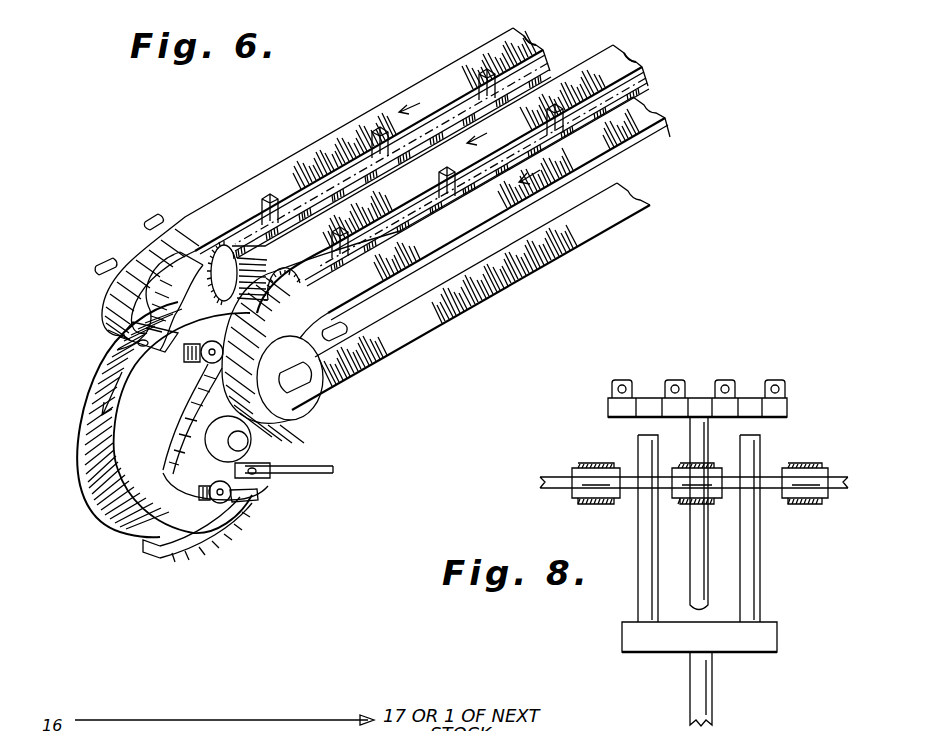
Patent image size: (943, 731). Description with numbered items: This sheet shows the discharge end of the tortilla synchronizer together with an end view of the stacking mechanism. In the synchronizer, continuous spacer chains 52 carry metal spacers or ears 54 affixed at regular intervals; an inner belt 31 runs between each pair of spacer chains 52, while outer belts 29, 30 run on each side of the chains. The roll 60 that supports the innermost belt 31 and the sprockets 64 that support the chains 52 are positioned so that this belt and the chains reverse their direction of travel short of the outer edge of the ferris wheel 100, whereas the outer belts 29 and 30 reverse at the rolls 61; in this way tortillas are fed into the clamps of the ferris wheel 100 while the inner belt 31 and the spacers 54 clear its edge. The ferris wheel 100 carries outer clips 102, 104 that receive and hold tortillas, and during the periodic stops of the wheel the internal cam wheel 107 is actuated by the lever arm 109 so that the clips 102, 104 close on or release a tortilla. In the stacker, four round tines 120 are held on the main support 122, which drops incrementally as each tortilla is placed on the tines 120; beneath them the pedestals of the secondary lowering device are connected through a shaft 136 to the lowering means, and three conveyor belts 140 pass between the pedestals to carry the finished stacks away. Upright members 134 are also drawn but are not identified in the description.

In FIG. 6, the belt 29 is at (308, 155).
In FIG. 6, the belt 30 is at (647, 135).
In FIG. 6, the belt 31 is at (613, 58).
In FIG. 6, the spacer chains 52 is at (533, 47).
In FIG. 6, the spacers 54 is at (374, 132).
In FIG. 6, the roll 60 is at (310, 277).
In FIG. 6, the rolls 61 is at (288, 397).
In FIG. 6, the sprockets 64 is at (237, 252).
In FIG. 6, the ferris wheel 100 is at (134, 513).
In FIG. 6, the outer clip 102 is at (180, 277).
In FIG. 6, the outer clip 104 is at (188, 545).
In FIG. 6, the internal cam wheel 107 is at (183, 443).
In FIG. 6, the lever arm 109 is at (320, 473).
In FIG. 8, the tines 120 is at (674, 385).
In FIG. 8, the main support 122 is at (703, 563).
In FIG. 8, the guide posts 134 is at (641, 575).
In FIG. 8, the shaft 136 is at (703, 702).
In FIG. 8, the conveyor belts 140 is at (585, 458).